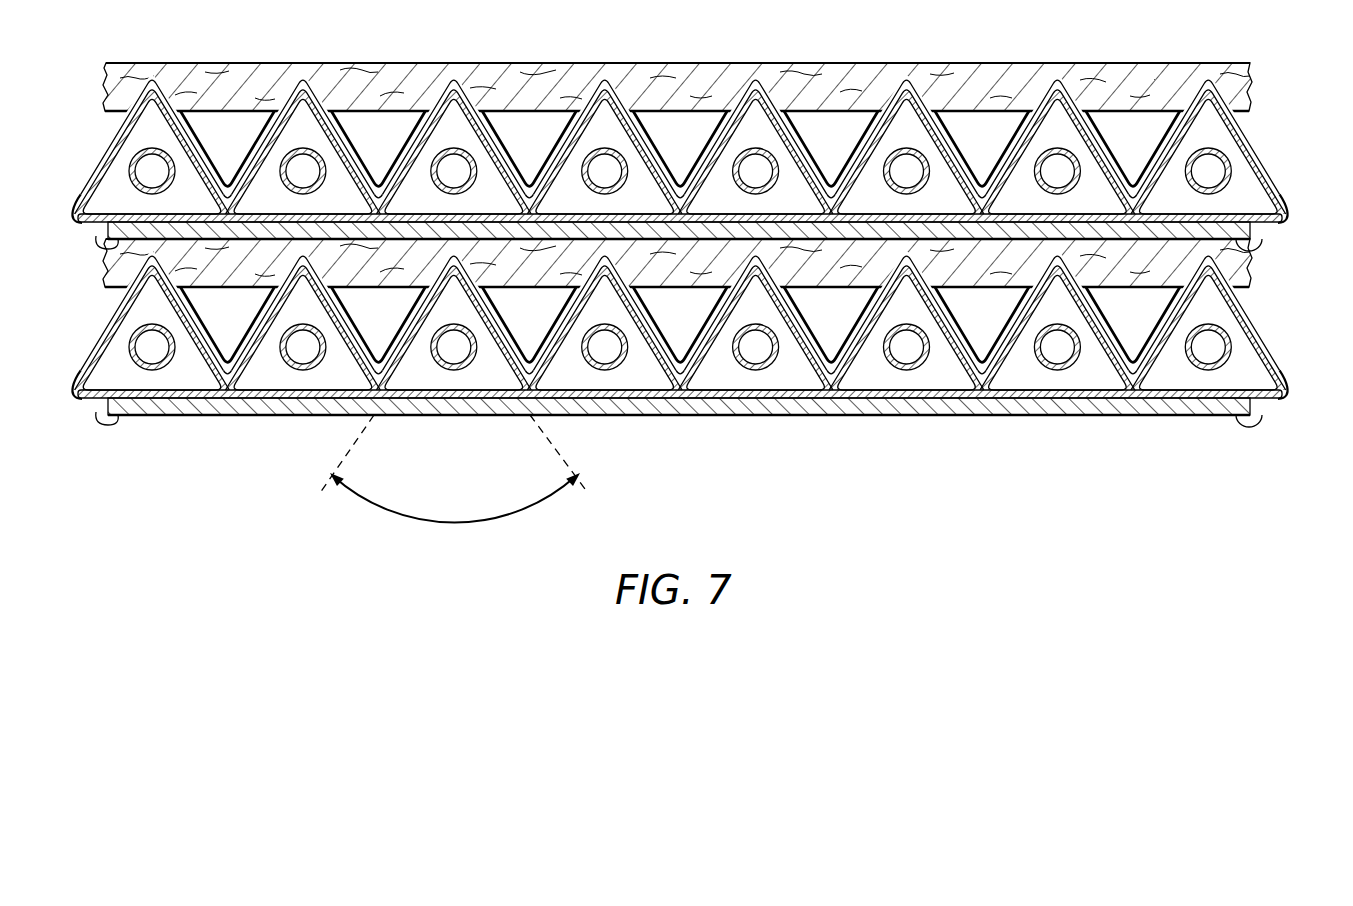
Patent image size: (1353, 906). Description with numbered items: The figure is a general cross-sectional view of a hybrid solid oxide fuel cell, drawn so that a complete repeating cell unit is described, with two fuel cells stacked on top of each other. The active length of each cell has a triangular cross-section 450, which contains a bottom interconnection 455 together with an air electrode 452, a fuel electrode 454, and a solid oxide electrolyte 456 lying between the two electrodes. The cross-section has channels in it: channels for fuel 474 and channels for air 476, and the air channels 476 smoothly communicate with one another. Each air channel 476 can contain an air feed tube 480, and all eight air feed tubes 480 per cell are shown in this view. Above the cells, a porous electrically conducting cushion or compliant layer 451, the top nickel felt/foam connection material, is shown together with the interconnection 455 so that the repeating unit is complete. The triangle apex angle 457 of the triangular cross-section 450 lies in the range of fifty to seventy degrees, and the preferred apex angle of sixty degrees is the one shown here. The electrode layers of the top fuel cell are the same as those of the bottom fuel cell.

The triangular cross-section 450 is at (674, 325).
The porous electrically conducting cushion/compliant layer 451 is at (1233, 263).
The air electrode 452 is at (258, 416).
The fuel electrode 454 is at (268, 318).
The bottom interconnection 455 is at (98, 240).
The solid oxide electrolyte 456 is at (425, 321).
The triangle apex angle 457 is at (456, 524).
The fuel channel 474 is at (836, 324).
The air channel 476 is at (786, 376).
The air feed tube 480 is at (143, 378).